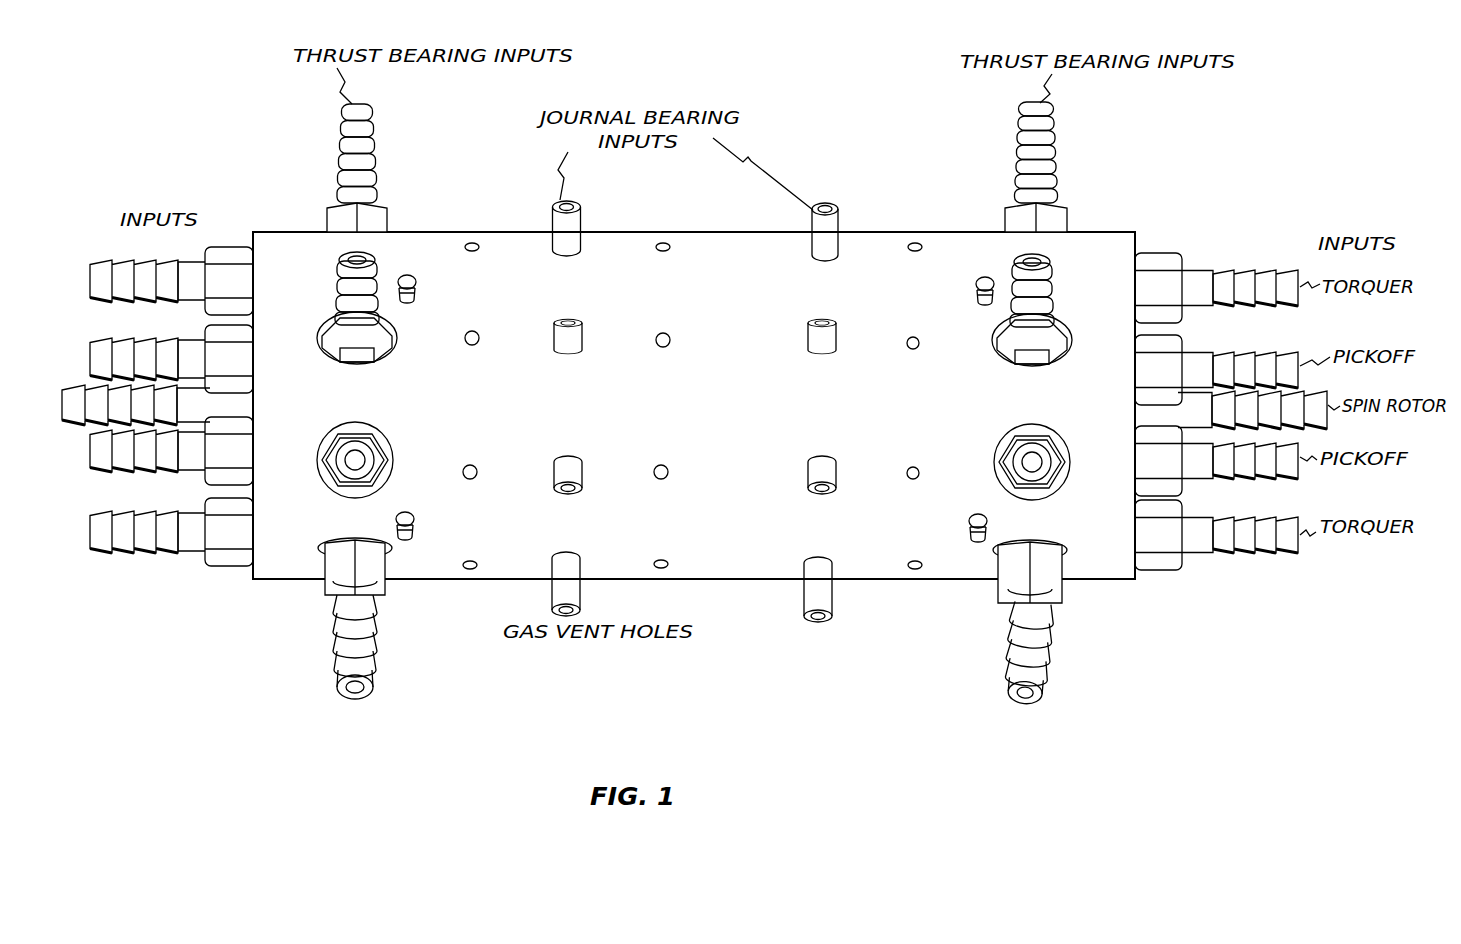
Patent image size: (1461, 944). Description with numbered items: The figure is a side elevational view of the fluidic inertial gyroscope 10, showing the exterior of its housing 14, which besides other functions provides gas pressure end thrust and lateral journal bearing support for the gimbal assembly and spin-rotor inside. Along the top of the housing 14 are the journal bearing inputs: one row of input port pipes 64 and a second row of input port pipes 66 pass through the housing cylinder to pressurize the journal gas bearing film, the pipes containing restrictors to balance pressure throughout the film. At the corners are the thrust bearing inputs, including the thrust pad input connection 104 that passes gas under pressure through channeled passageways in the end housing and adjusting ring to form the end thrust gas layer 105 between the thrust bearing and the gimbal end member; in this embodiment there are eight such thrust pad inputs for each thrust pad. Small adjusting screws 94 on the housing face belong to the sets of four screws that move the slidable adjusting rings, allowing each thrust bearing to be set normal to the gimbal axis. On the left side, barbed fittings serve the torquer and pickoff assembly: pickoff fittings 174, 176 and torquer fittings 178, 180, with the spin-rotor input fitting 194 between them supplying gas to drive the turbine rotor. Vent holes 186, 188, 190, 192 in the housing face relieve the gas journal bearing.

The gyroscope 10 is at (820, 154).
The housing 14 is at (640, 226).
The input port pipes 64 is at (582, 204).
The input port pipes 66 is at (840, 220).
The adjusting screw 94 is at (416, 290).
The thrust pad input connection 104 is at (382, 178).
The end thrust gas layer 105 is at (1062, 165).
The pickoff fitting 174 is at (192, 468).
The pickoff fitting 176 is at (128, 345).
The torquer fitting 178 is at (176, 552).
The torquer fitting 180 is at (166, 266).
The vent hole 186 is at (500, 628).
The vent hole 188 is at (476, 466).
The vent hole 190 is at (479, 333).
The vent hole 192 is at (480, 247).
The spin-rotor input fitting 194 is at (90, 425).